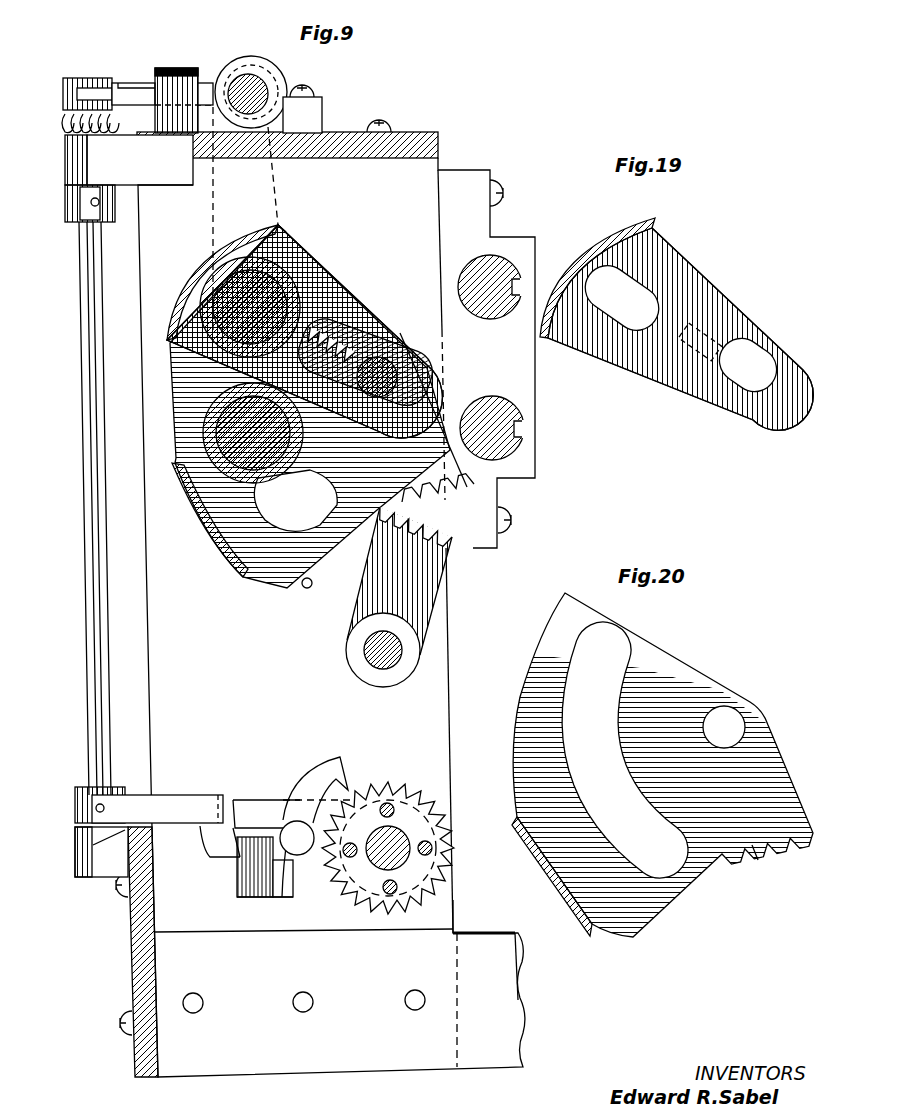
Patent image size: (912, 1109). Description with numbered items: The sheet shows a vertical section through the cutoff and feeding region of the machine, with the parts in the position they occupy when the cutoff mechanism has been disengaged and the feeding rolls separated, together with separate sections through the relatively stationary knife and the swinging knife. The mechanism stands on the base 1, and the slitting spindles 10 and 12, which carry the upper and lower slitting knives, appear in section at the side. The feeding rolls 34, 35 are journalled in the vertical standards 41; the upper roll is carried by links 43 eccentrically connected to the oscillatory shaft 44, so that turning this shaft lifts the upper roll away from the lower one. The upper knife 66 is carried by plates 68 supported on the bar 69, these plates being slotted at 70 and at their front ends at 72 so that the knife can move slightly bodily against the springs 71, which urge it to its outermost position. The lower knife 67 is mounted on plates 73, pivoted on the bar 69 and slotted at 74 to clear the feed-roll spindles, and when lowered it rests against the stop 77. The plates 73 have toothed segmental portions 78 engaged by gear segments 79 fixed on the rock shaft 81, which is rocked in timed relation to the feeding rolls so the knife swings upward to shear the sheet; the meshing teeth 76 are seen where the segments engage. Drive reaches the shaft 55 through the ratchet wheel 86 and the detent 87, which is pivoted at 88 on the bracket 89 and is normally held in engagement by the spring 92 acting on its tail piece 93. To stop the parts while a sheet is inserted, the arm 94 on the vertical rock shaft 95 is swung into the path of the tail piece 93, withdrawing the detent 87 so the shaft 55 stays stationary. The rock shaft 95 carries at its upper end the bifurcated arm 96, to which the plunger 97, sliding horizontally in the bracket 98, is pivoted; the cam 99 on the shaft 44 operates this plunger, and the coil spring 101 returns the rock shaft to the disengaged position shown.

In FIG. 9, the base 1 is at (485, 933).
In FIG. 9, the rotating spindle 10 is at (483, 313).
In FIG. 9, the rotating spindle 12 is at (505, 404).
In FIG. 9, the feeding roll 34 is at (280, 270).
In FIG. 9, the feeding roll 35 is at (277, 470).
In FIG. 9, the vertical standards 41 is at (152, 310).
In FIG. 9, the links 43 is at (275, 185).
In FIG. 9, the oscillatory shaft 44 is at (256, 78).
In FIG. 9, the shaft 55 is at (395, 830).
In FIG. 9, the upper knife 66 is at (205, 265).
In FIG. 19, the upper knife 66 is at (620, 228).
In FIG. 9, the lower knife 67 is at (198, 545).
In FIG. 20, the lower knife 67 is at (572, 918).
In FIG. 9, the plates 68 is at (330, 272).
In FIG. 19, the plates 68 is at (712, 275).
In FIG. 9, the bar 69 is at (400, 345).
In FIG. 9, the slot 70 is at (380, 356).
In FIG. 19, the slot 70 is at (750, 345).
In FIG. 9, the springs 71 is at (355, 325).
In FIG. 9, the slot 72 is at (284, 236).
In FIG. 19, the slot 72 is at (640, 268).
In FIG. 9, the plates 73 is at (275, 565).
In FIG. 20, the plates 73 is at (680, 672).
In FIG. 9, the slot 74 is at (315, 492).
In FIG. 20, the slot 74 is at (560, 752).
In FIG. 9, the rack teeth 76 is at (455, 458).
In FIG. 9, the stop 77 is at (307, 588).
In FIG. 20, the toothed segmental portions 78 is at (765, 845).
In FIG. 9, the gear segments 79 is at (440, 570).
In FIG. 9, the rock shaft 81 is at (375, 660).
In FIG. 9, the ratchet wheel 86 is at (375, 790).
In FIG. 9, the detent 87 is at (330, 762).
In FIG. 9, the pivot 88 is at (282, 897).
In FIG. 9, the bracket 89 is at (255, 800).
In FIG. 9, the spring 92 is at (237, 880).
In FIG. 9, the tail piece 93 is at (205, 848).
In FIG. 9, the arm 94 is at (180, 795).
In FIG. 9, the vertical rock shaft 95 is at (92, 692).
In FIG. 9, the bifurcated arm 96 is at (100, 78).
In FIG. 9, the plunger 97 is at (137, 82).
In FIG. 9, the bracket 98 is at (190, 68).
In FIG. 9, the cam 99 is at (292, 92).
In FIG. 9, the coil spring 101 is at (63, 118).